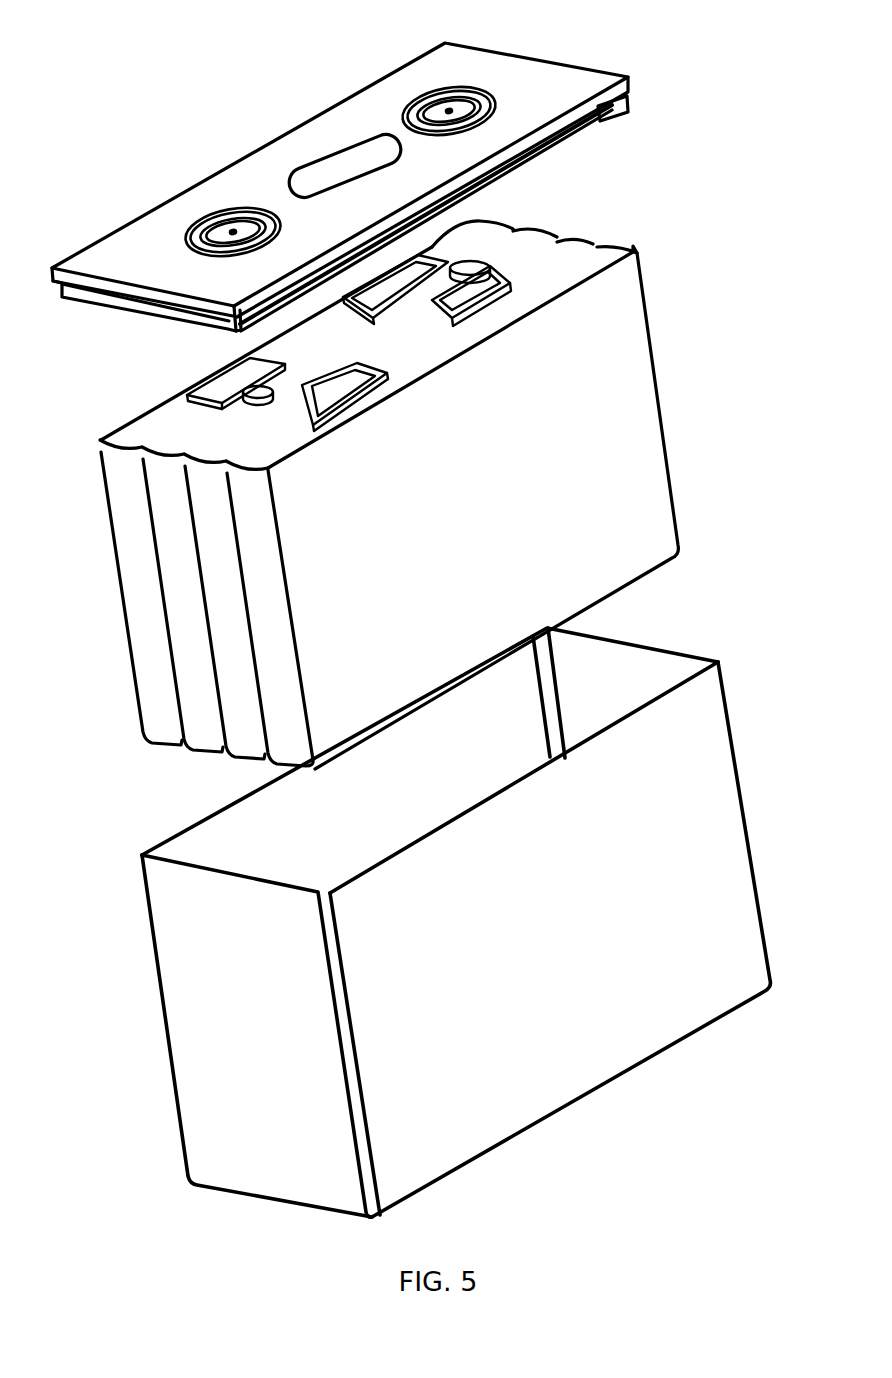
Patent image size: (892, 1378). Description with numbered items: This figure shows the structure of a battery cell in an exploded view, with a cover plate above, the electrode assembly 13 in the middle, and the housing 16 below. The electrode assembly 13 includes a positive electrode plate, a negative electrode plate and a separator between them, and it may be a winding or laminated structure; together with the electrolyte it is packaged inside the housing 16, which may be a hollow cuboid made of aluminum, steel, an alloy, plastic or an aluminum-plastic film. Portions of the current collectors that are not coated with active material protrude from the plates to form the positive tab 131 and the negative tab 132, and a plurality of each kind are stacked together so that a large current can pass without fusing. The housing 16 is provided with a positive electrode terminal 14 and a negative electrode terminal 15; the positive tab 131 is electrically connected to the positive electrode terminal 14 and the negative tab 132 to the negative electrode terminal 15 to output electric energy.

The electrode assembly 13 is at (603, 382).
The positive tab 131 is at (466, 288).
The negative tab 132 is at (278, 354).
The positive electrode terminal 14 is at (440, 104).
The negative electrode terminal 15 is at (222, 230).
The housing 16 is at (703, 795).